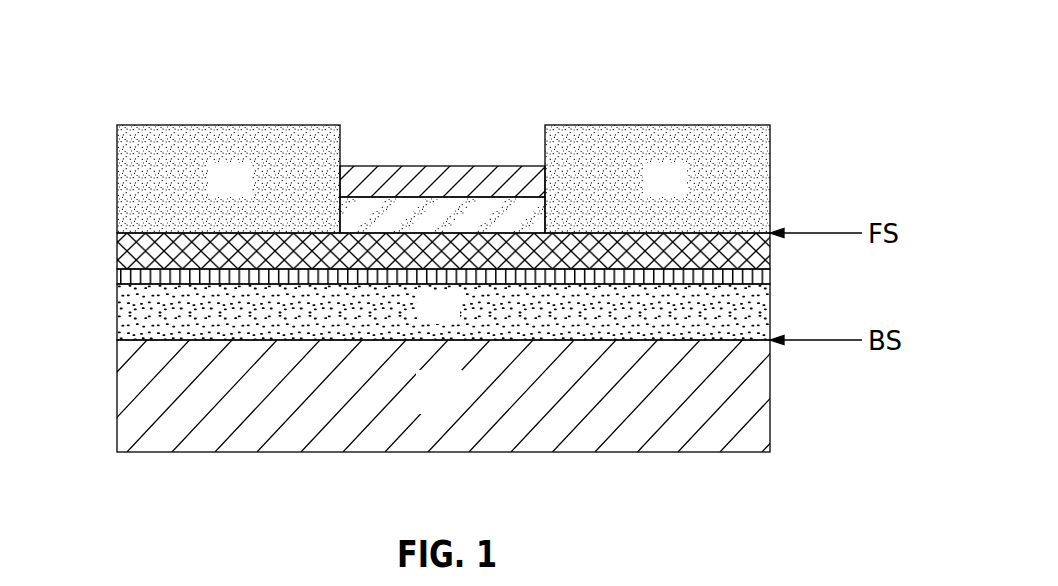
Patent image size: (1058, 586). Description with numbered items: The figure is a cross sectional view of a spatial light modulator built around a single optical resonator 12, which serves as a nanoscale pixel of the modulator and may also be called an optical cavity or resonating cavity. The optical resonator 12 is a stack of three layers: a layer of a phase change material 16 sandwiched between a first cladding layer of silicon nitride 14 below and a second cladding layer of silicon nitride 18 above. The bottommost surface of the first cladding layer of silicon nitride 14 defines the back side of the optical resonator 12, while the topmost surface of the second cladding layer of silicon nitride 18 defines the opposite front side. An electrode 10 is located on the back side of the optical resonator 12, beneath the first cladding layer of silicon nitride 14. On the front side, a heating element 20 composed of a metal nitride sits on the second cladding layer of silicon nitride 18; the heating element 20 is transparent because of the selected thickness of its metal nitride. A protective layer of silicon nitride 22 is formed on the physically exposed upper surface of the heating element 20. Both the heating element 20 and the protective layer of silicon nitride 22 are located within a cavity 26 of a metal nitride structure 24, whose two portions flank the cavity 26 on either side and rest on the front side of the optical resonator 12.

The electrode 10 is at (458, 408).
The optical resonator 12 is at (452, 251).
The first cladding layer of silicon nitride 14 is at (458, 323).
The layer of a phase change material 16 is at (760, 278).
The second cladding layer of silicon nitride 18 is at (140, 245).
The heating element 20 is at (518, 210).
The protective layer of silicon nitride 22 is at (378, 180).
The metal nitride structure 24 is at (246, 193).
The cavity 26 is at (441, 121).